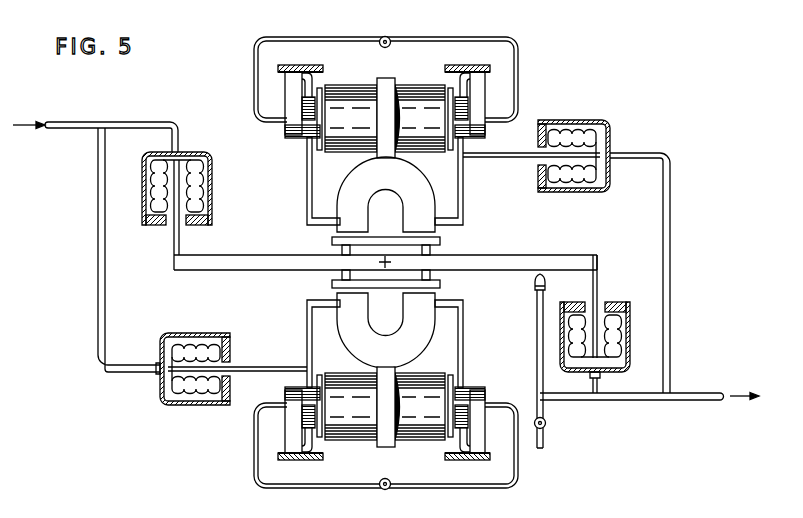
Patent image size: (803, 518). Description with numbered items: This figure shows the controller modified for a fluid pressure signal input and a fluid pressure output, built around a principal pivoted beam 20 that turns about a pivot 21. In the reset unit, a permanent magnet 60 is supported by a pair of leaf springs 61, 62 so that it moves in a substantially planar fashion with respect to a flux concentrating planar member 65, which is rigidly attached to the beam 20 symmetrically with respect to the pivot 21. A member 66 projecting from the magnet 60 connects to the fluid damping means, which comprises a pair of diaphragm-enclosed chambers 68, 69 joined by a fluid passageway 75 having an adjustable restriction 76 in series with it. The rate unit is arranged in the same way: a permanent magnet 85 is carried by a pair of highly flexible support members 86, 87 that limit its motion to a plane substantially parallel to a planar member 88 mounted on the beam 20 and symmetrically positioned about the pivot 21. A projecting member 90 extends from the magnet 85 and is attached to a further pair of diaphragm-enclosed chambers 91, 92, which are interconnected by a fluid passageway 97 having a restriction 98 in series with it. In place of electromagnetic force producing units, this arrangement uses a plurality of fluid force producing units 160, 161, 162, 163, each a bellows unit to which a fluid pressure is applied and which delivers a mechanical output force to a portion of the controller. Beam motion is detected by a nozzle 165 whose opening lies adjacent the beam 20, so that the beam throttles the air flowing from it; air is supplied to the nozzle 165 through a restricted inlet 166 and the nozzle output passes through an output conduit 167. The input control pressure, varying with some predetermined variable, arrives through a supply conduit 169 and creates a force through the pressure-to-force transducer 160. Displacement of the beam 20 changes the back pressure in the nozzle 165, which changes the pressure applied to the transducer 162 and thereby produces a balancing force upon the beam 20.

The beam 20 is at (258, 257).
The pivot 21 is at (382, 262).
The permanent magnet 60 is at (348, 330).
The leaf spring 61 is at (307, 330).
The leaf spring 62 is at (463, 328).
The flux concentrating planar member 65 is at (442, 285).
The member 66 is at (385, 440).
The chamber 68 is at (418, 430).
The chamber 69 is at (352, 430).
The fluid passageway 75 is at (348, 489).
The adjustable restriction 76 is at (390, 491).
The permanent magnet 85 is at (352, 188).
The flexible support member 86 is at (463, 180).
The flexible support member 87 is at (307, 180).
The planar member 88 is at (440, 242).
The projecting member 90 is at (387, 80).
The chamber 91 is at (425, 90).
The chamber 92 is at (358, 90).
The fluid passageway 97 is at (346, 37).
The restriction 98 is at (387, 36).
The fluid force producing unit 160 is at (226, 199).
The fluid force producing unit 161 is at (182, 324).
The fluid force producing unit 162 is at (615, 292).
The fluid force producing unit 163 is at (583, 107).
The nozzle 165 is at (532, 284).
The restricted inlet 166 is at (553, 437).
The output conduit 167 is at (700, 400).
The supply conduit 169 is at (78, 122).